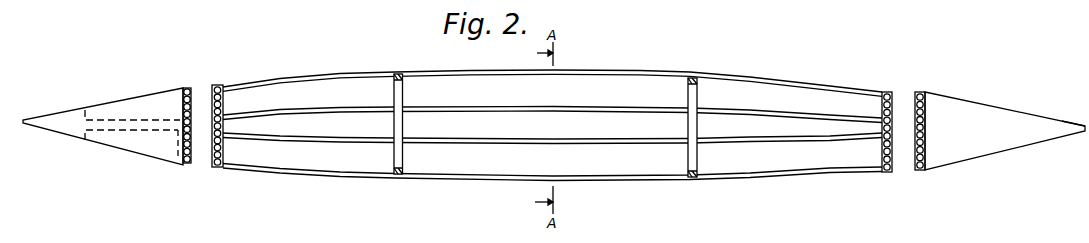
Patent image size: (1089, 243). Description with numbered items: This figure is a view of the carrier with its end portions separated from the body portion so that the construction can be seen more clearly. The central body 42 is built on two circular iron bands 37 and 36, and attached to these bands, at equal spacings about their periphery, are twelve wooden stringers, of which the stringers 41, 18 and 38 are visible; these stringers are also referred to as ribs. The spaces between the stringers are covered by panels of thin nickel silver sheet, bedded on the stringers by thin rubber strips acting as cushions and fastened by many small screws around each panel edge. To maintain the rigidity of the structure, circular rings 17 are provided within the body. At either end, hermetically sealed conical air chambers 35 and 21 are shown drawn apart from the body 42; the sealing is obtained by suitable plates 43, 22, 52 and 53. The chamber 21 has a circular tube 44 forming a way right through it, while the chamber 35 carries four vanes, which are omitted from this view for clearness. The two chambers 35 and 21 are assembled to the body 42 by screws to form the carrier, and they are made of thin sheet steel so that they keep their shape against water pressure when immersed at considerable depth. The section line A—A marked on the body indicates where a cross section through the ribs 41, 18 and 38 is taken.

The circular ring 17 is at (393, 97).
The wooden stringer 18 is at (629, 112).
The conical air chamber 21 is at (143, 108).
The sealing plate 22 is at (1073, 134).
The conical air chamber 35 is at (971, 146).
The circular iron band 36 is at (221, 84).
The circular iron band 37 is at (888, 90).
The wooden stringer 38 is at (762, 182).
The wooden stringer 41 is at (747, 78).
The body 42 is at (540, 92).
The sealing plate 43 is at (926, 110).
The circular tube 44 is at (108, 131).
The sealing plate 52 is at (177, 145).
The sealing plate 53 is at (87, 118).